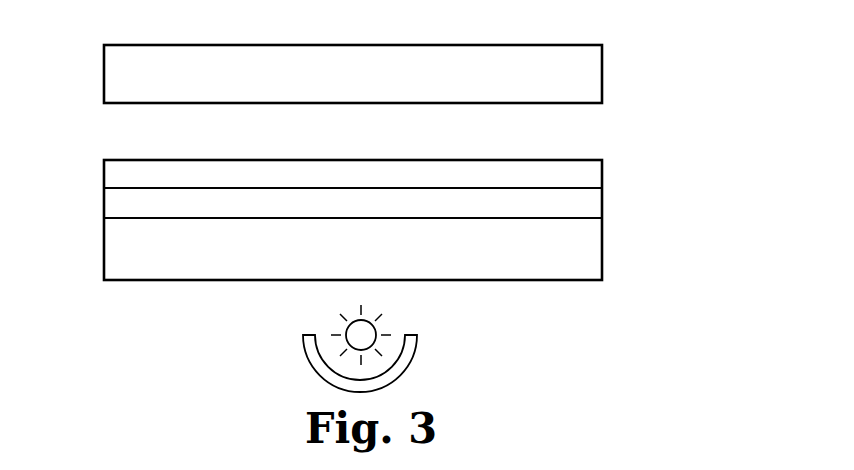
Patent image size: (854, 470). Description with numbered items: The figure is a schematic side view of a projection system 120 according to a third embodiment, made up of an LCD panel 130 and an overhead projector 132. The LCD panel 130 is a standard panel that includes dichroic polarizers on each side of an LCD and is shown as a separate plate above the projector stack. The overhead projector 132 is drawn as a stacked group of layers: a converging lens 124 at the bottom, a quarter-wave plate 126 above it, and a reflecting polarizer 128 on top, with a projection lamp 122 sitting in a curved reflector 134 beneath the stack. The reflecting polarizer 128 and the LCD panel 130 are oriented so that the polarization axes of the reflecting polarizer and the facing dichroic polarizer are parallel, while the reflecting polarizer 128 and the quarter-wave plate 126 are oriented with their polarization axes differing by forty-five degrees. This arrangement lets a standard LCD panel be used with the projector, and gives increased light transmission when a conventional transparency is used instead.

The projection system 120 is at (630, 41).
The projection lamp 122 is at (364, 334).
The converging lens 124 is at (578, 247).
The quarter-wave plate 126 is at (582, 200).
The reflecting polarizer 128 is at (583, 173).
The LCD panel 130 is at (582, 80).
The overhead projector 132 is at (358, 211).
The reflector 134 is at (407, 360).